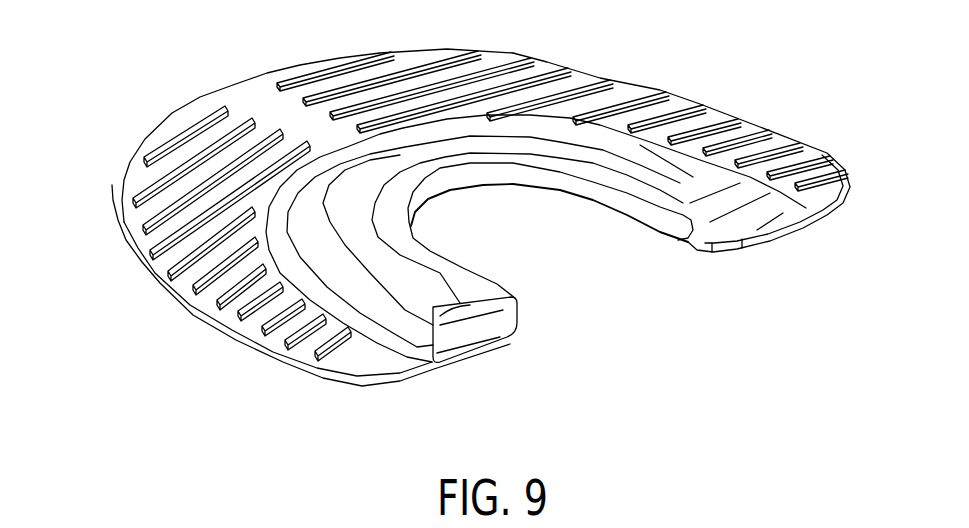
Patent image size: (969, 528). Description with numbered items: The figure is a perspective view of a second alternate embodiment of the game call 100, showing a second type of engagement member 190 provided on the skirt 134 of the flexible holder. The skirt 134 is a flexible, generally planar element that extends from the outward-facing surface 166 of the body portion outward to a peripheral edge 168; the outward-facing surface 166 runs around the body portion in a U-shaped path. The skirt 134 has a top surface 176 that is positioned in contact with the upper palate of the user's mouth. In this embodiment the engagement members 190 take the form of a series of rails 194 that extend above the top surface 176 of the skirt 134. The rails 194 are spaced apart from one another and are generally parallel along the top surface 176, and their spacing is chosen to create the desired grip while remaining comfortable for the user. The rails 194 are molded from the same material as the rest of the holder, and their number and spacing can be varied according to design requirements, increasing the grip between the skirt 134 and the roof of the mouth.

The game call 100 is at (314, 60).
The peripheral edge 168 is at (172, 114).
The engagement member 190 is at (620, 83).
The rails 194 is at (148, 187).
The skirt 134 is at (212, 292).
The top surface 176 is at (353, 355).
The outward-facing surface 166 is at (403, 313).